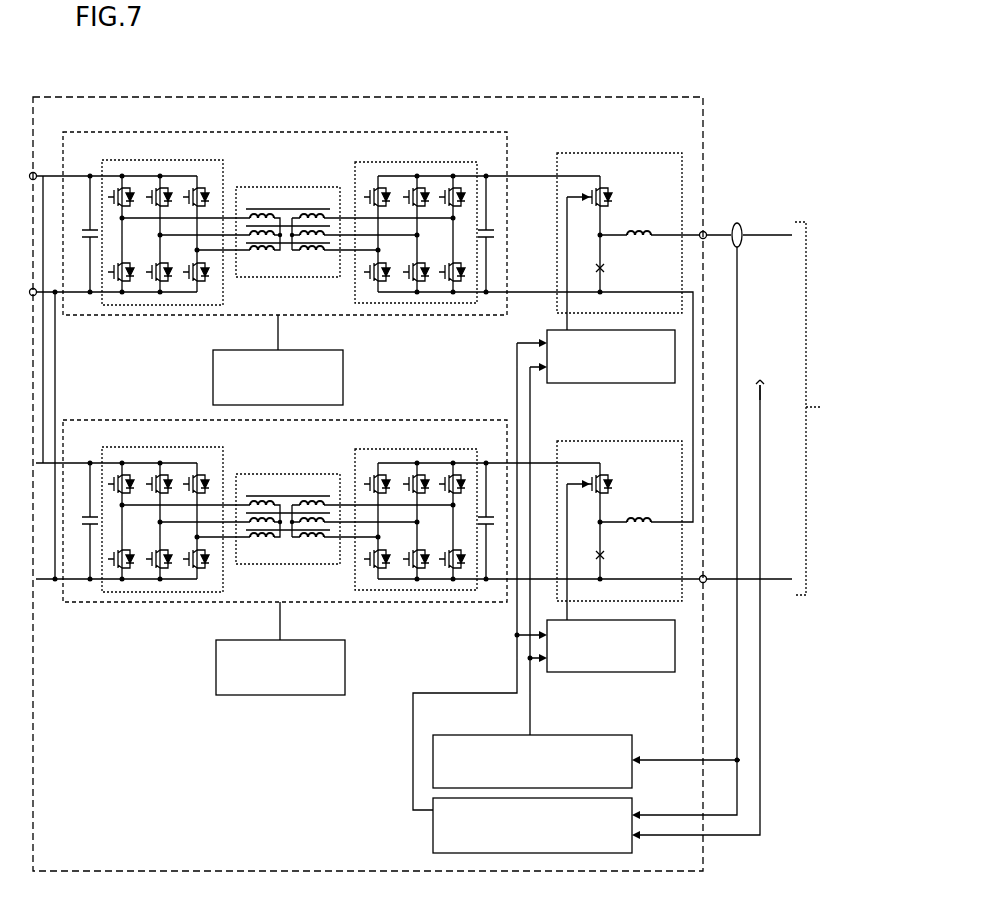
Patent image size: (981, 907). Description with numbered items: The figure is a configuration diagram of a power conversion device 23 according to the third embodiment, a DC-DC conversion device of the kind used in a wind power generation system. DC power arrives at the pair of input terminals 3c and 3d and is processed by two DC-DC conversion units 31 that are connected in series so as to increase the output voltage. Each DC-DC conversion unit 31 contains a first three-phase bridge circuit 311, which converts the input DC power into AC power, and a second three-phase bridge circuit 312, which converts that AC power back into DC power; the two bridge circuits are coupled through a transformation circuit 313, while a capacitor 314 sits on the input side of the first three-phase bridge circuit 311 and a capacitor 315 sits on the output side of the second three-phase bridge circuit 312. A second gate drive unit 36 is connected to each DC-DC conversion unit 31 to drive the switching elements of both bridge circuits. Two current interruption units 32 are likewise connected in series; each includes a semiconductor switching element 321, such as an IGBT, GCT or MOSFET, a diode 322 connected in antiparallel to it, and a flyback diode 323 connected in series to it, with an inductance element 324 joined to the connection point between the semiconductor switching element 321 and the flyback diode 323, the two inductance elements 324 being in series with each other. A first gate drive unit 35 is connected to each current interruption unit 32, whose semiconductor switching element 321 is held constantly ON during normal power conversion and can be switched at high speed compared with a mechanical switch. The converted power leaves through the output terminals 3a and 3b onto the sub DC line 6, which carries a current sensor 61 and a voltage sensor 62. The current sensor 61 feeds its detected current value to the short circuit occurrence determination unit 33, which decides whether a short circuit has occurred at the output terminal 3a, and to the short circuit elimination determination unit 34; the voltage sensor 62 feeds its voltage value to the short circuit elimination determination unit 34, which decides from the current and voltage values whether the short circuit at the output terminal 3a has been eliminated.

The power conversion device 23 is at (498, 97).
The DC-DC conversion unit 31 is at (408, 132).
The first three-phase bridge circuit 311 is at (228, 290).
The second three-phase bridge circuit 312 is at (353, 167).
The transformation circuit 313 is at (290, 187).
The capacitor 314 is at (86, 229).
The capacitor 315 is at (486, 229).
The current interruption unit 32 is at (617, 153).
The semiconductor switching element 321 is at (589, 210).
The diode 322 is at (610, 192).
The flyback diode 323 is at (608, 268).
The inductance element 324 is at (633, 229).
The short circuit occurrence determination unit 33 is at (632, 737).
The short circuit elimination determination unit 34 is at (433, 838).
The first gate drive unit 35 is at (664, 383).
The second gate drive unit 36 is at (213, 367).
The output terminal 3a is at (706, 240).
The output terminal 3b is at (706, 586).
The input terminal 3c is at (30, 182).
The input terminal 3d is at (30, 298).
The sub DC line 6 is at (815, 408).
The current sensor 61 is at (737, 223).
The voltage sensor 62 is at (760, 384).